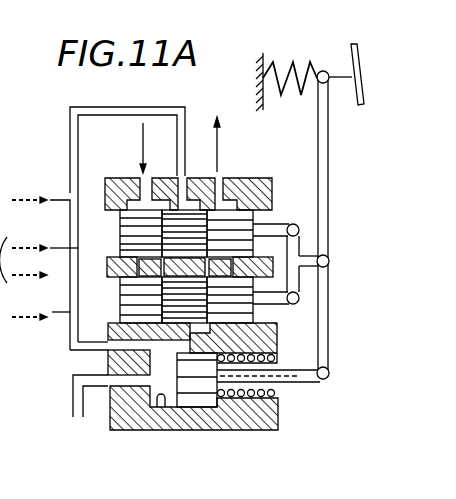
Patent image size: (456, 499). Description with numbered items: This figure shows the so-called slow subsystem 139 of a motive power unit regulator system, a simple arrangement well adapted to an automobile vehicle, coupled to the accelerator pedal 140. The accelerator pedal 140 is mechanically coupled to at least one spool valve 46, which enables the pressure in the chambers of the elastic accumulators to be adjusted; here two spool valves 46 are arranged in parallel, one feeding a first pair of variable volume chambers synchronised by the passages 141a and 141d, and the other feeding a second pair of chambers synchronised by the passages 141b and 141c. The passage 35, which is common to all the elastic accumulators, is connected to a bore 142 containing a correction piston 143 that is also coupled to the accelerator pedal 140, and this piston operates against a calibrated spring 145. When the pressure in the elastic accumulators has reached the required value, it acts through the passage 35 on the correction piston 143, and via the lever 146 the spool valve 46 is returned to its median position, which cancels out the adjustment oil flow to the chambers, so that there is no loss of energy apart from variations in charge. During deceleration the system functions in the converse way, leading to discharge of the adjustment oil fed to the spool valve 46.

The slow subsystem 139 is at (110, 170).
The accelerator pedal 140 is at (352, 53).
The passage 141a is at (70, 193).
The passage 141b is at (70, 320).
The passage 141c is at (70, 277).
The passage 141d is at (70, 238).
The spool valve 46 is at (240, 208).
The lever 146 is at (318, 330).
The bore 142 is at (154, 427).
The correction piston 143 is at (200, 395).
The calibrated spring 145 is at (268, 400).
The passage 35 is at (78, 417).